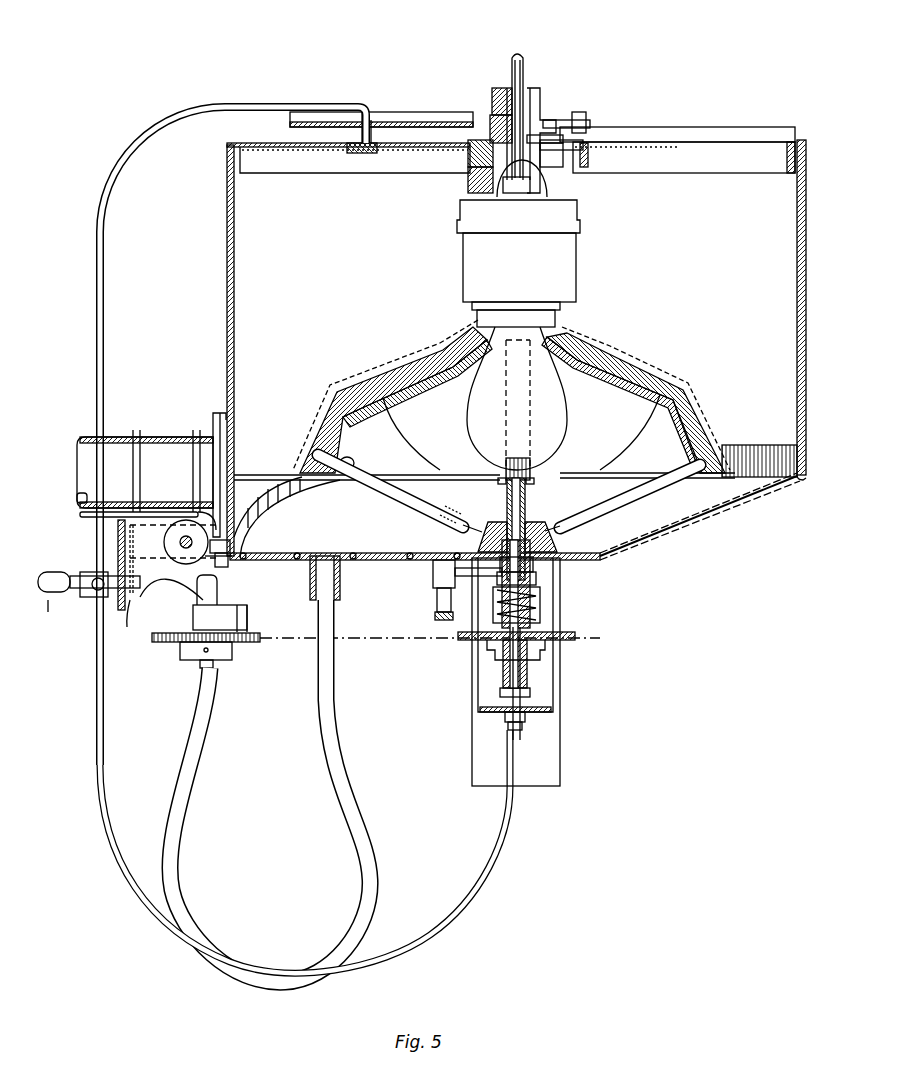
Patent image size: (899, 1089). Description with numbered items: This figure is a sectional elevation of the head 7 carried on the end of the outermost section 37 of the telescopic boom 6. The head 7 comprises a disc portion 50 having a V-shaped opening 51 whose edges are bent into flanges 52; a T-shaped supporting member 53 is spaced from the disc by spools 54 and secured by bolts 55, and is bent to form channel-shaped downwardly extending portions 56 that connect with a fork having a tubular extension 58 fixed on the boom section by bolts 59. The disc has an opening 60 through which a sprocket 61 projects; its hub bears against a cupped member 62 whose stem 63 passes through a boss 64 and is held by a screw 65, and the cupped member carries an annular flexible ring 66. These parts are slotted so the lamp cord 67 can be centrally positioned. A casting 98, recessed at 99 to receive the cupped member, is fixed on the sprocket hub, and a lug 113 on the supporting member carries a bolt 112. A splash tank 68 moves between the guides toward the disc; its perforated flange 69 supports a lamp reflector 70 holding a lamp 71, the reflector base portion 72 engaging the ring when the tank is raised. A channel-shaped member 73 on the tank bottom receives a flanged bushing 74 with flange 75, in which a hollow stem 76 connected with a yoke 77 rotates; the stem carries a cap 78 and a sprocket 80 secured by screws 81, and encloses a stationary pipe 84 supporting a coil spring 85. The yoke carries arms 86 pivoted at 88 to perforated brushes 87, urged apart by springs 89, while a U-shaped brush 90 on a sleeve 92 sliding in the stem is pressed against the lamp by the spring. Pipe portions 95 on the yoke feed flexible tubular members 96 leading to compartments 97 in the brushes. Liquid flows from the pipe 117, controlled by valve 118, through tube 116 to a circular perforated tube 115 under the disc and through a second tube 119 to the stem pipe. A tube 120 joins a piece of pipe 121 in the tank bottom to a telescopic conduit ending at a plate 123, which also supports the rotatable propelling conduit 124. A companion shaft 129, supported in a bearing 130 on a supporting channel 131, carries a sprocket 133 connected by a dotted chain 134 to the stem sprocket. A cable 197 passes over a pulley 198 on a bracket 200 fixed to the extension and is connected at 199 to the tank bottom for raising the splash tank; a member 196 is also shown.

The boom 6 is at (78, 447).
The head 7 is at (775, 515).
The section 37 is at (78, 497).
The disc portion 50 is at (263, 145).
The V-shaped opening 51 is at (760, 140).
The flanges 52 is at (708, 133).
The T-shaped supporting member 53 is at (410, 122).
The spools 54 is at (352, 148).
The bolts 55 is at (362, 118).
The downwardly extending portions 56 is at (561, 727).
The tubular extension 58 is at (160, 437).
The bolts 59 is at (213, 420).
The opening 60 is at (493, 127).
The sprocket 61 is at (535, 140).
The cupped member 62 is at (475, 180).
The stem 63 is at (532, 92).
The boss 64 is at (540, 110).
The screw or bolt 65 is at (497, 90).
The annular flexible ring 66 is at (480, 195).
The lamp cord 67 is at (517, 88).
The splash tank 68 is at (750, 307).
The perforated flange 69 is at (270, 475).
The lamp reflector 70 is at (680, 378).
The lamp 71 is at (513, 375).
The base portion 72 is at (577, 245).
The channel-shaped member 73 is at (545, 568).
The flanged bushing 74 is at (542, 581).
The flange 75 is at (520, 553).
The hollow stem 76 is at (503, 670).
The yoke 77 is at (540, 530).
The cap 78 is at (542, 615).
The sprocket 80 is at (545, 647).
The bolts or screws 81 is at (575, 636).
The pipe 84 is at (525, 718).
The coil spring 85 is at (455, 600).
The arms 86 is at (395, 490).
The brushes 87 is at (460, 378).
The pivot 88 is at (688, 470).
The springs 89 is at (350, 460).
The brush 90 is at (520, 456).
The sleeve 92 is at (512, 511).
The pipe portions 95 is at (505, 470).
The flexible tubular members 96 is at (415, 450).
The compartments 97 is at (420, 372).
The casting 98 is at (470, 155).
The recess 99 is at (563, 165).
The bolt 112 is at (585, 150).
The lug 113 is at (550, 130).
The perforated tube 115 is at (405, 150).
The fluid-conveying tube 116 is at (104, 216).
The pipe 117 is at (70, 578).
The valve 118 is at (85, 597).
The second liquid-conveying tube 119 is at (97, 772).
The tube 120 is at (332, 735).
The piece of pipe 121 is at (340, 580).
The plate 123 is at (118, 540).
The propelling conduit 124 is at (50, 598).
The companion shaft 129 is at (210, 590).
The bearing 130 is at (200, 618).
The supporting channel 131 is at (245, 618).
The sprocket 133 is at (180, 642).
The chain 134 is at (385, 642).
The arm 196 is at (140, 605).
The cable or rope 197 is at (80, 515).
The pulley 198 is at (172, 545).
The connection 199 is at (233, 562).
The bracket 200 is at (197, 512).